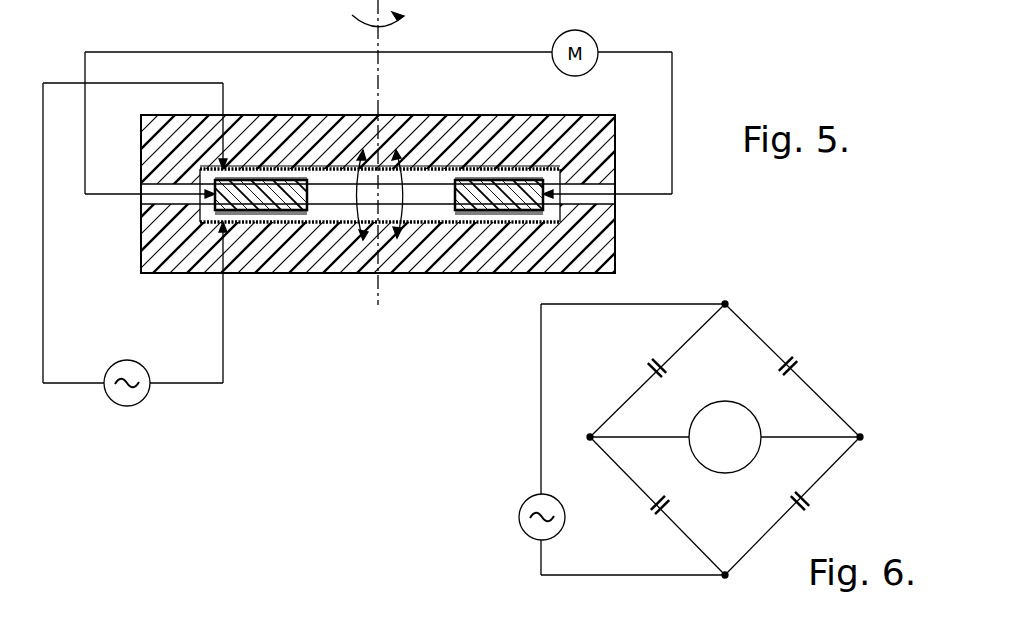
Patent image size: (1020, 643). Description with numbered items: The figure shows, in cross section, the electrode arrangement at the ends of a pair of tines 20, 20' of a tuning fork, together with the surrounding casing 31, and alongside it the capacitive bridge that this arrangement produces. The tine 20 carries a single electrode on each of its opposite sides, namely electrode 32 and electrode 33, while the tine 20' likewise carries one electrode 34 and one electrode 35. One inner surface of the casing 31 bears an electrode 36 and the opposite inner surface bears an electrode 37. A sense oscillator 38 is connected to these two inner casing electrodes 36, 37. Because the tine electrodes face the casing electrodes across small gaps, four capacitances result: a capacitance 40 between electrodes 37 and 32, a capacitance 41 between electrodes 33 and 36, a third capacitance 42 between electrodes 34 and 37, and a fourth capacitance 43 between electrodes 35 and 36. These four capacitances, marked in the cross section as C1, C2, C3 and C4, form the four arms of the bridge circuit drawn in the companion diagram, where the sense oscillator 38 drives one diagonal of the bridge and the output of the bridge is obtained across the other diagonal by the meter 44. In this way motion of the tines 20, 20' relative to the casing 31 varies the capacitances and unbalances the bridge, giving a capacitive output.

In FIG. 5, the first tine 20 is at (500, 246).
In FIG. 5, the first tine 20' is at (260, 246).
In FIG. 5, the casing 31 is at (446, 125).
In FIG. 5, the electrode 32 is at (481, 214).
In FIG. 5, the electrode 33 is at (502, 122).
In FIG. 5, the electrode 34 is at (298, 212).
In FIG. 5, the electrode 35 is at (244, 170).
In FIG. 5, the electrode 36 is at (328, 175).
In FIG. 6, the electrode 36 is at (655, 577).
In FIG. 5, the electrode 37 is at (345, 216).
In FIG. 6, the electrode 37 is at (541, 378).
In FIG. 5, the sense oscillator 38 is at (120, 362).
In FIG. 6, the sense oscillator 38 is at (522, 505).
In FIG. 6, the capacitance 40 is at (788, 356).
In FIG. 6, the capacitance 41 is at (812, 503).
In FIG. 6, the capacitance 42 is at (645, 368).
In FIG. 6, the capacitance 43 is at (652, 508).
In FIG. 6, the meter 44 is at (729, 402).
In FIG. 5, the capacitance C1 is at (253, 215).
In FIG. 5, the capacitance C2 is at (508, 215).
In FIG. 5, the capacitance C3 is at (252, 167).
In FIG. 5, the capacitance C4 is at (509, 177).